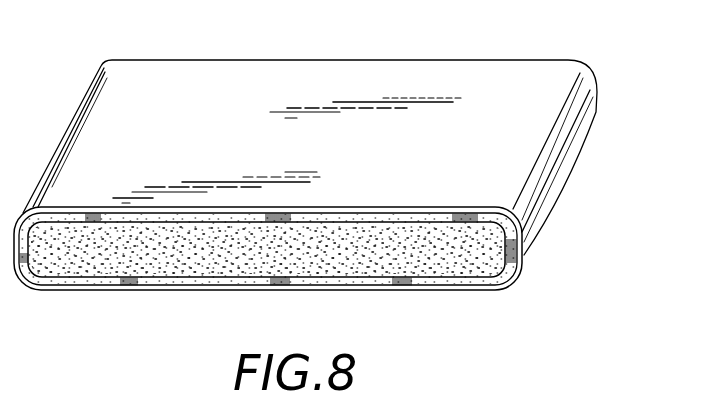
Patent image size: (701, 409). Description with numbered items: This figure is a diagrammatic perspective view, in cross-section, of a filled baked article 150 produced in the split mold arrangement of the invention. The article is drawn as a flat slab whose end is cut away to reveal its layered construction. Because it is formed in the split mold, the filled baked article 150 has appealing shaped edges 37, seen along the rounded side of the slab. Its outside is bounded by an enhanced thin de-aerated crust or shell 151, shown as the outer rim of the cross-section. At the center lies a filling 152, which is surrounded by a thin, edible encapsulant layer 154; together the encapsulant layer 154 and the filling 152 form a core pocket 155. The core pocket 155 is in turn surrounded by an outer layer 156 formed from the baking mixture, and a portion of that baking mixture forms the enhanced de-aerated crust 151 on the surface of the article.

The filled baked article 150 is at (543, 46).
The shaped edges 37 is at (548, 199).
The enhanced thin de-aerated crust 151 is at (440, 207).
The filling 152 is at (444, 270).
The encapsulant layer 154 is at (361, 279).
The core pocket 155 is at (256, 289).
The outer layer 156 is at (150, 291).